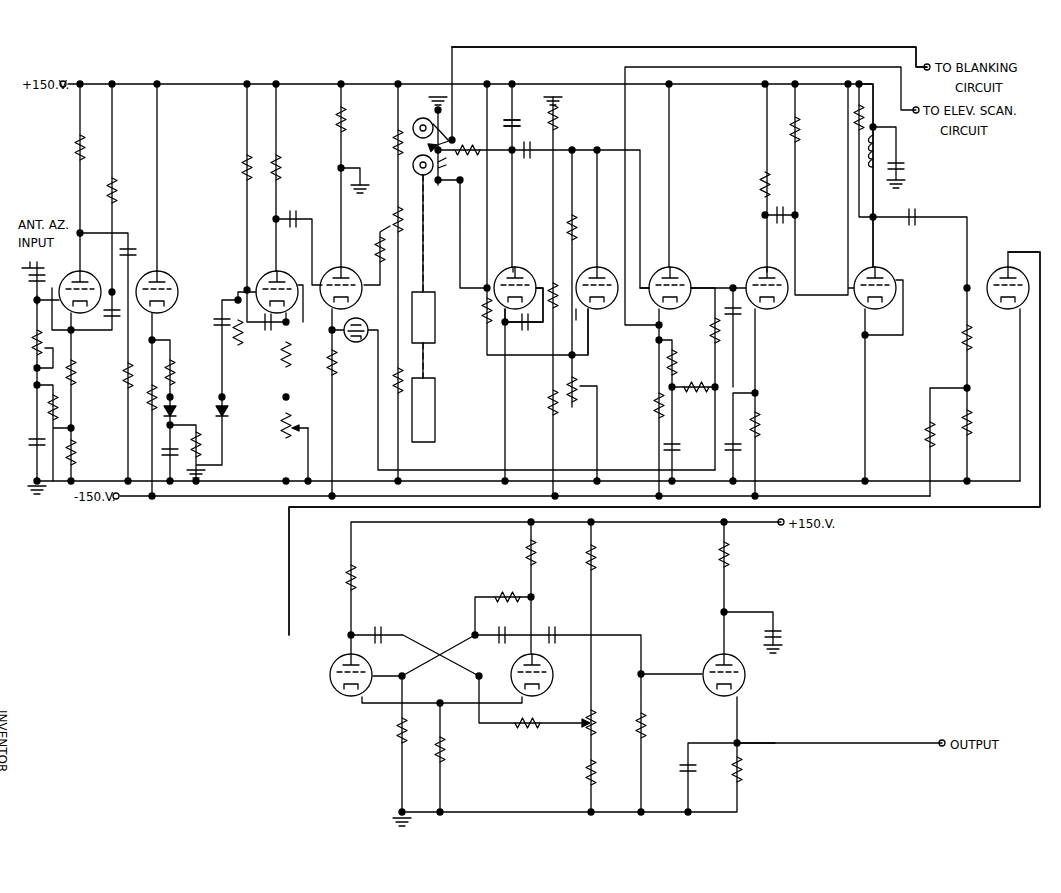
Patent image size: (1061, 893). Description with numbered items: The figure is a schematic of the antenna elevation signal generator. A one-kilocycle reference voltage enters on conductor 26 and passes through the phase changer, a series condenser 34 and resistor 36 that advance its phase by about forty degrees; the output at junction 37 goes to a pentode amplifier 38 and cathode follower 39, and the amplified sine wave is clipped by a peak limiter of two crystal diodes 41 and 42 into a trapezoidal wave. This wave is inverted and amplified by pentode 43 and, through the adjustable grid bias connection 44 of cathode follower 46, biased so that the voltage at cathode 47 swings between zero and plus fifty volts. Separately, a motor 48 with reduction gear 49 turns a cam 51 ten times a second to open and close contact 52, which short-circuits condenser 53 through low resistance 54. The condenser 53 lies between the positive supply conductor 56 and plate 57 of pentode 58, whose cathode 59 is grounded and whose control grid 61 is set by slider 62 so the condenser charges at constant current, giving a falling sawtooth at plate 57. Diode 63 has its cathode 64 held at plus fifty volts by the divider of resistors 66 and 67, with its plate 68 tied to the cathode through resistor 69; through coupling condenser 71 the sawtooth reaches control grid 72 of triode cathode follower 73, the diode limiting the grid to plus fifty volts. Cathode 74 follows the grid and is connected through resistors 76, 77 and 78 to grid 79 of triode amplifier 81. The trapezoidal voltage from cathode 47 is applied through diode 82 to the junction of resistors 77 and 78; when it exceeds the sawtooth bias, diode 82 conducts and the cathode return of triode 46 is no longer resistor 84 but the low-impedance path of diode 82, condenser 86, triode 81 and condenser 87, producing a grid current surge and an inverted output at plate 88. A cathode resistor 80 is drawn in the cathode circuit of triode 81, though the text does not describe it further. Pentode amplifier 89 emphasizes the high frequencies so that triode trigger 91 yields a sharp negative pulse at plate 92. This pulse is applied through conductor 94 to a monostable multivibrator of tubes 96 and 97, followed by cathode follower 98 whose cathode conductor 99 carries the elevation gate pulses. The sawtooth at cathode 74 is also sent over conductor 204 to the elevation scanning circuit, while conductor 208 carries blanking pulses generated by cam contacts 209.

The conductor 26 is at (44, 262).
The condenser 34 is at (44, 276).
The resistor 36 is at (36, 340).
The junction 37 is at (34, 301).
The pentode amplifier 38 is at (79, 272).
The cathode follower 39 is at (161, 272).
The crystal diode 41 is at (174, 412).
The crystal diode 42 is at (226, 412).
The pentode 43 is at (268, 272).
The adjustable grid bias connection 44 is at (378, 246).
The cathode follower 46 is at (334, 268).
The cathode 47 is at (296, 313).
The motor 48 is at (435, 408).
The reduction gear 49 is at (435, 320).
The cam 51 is at (416, 174).
The contact 52 is at (449, 165).
The condenser 53 is at (508, 120).
The low resistance 54 is at (462, 148).
The conductor 56 is at (504, 82).
The plate 57 is at (508, 276).
The pentode 58 is at (522, 264).
The cathode 59 is at (512, 322).
The control grid 61 is at (532, 289).
The slider 62 is at (536, 322).
The diode 63 is at (592, 316).
The cathode 64 is at (580, 321).
The resistor 66 is at (483, 322).
The adjustable resistor 67 is at (574, 386).
The diode plate 68 is at (597, 268).
The resistor 69 is at (572, 222).
The coupling condenser 71 is at (529, 142).
The control grid 72 is at (649, 270).
The triode cathode follower 73 is at (673, 270).
The cathode 74 is at (702, 292).
The resistor 76 is at (678, 350).
The resistor 77 is at (703, 372).
The resistor 78 is at (712, 294).
The grid 79 is at (738, 284).
The resistor 80 is at (760, 414).
The triode amplifier 81 is at (760, 267).
The diode 82 is at (361, 322).
The resistor 84 is at (326, 319).
The condenser 86 is at (735, 316).
The condenser 87 is at (736, 434).
The plate 88 is at (770, 270).
The pentode amplifier 89 is at (858, 306).
The triode trigger 91 is at (967, 310).
The plate 92 is at (1000, 268).
The conductor 94 is at (1031, 264).
The tube 96 is at (330, 687).
The tube 97 is at (547, 686).
The cathode follower 98 is at (713, 654).
The cathode conductor 99 is at (762, 746).
The conductor 204 is at (880, 173).
The conductor 208 is at (450, 52).
The cam contacts 209 is at (452, 122).